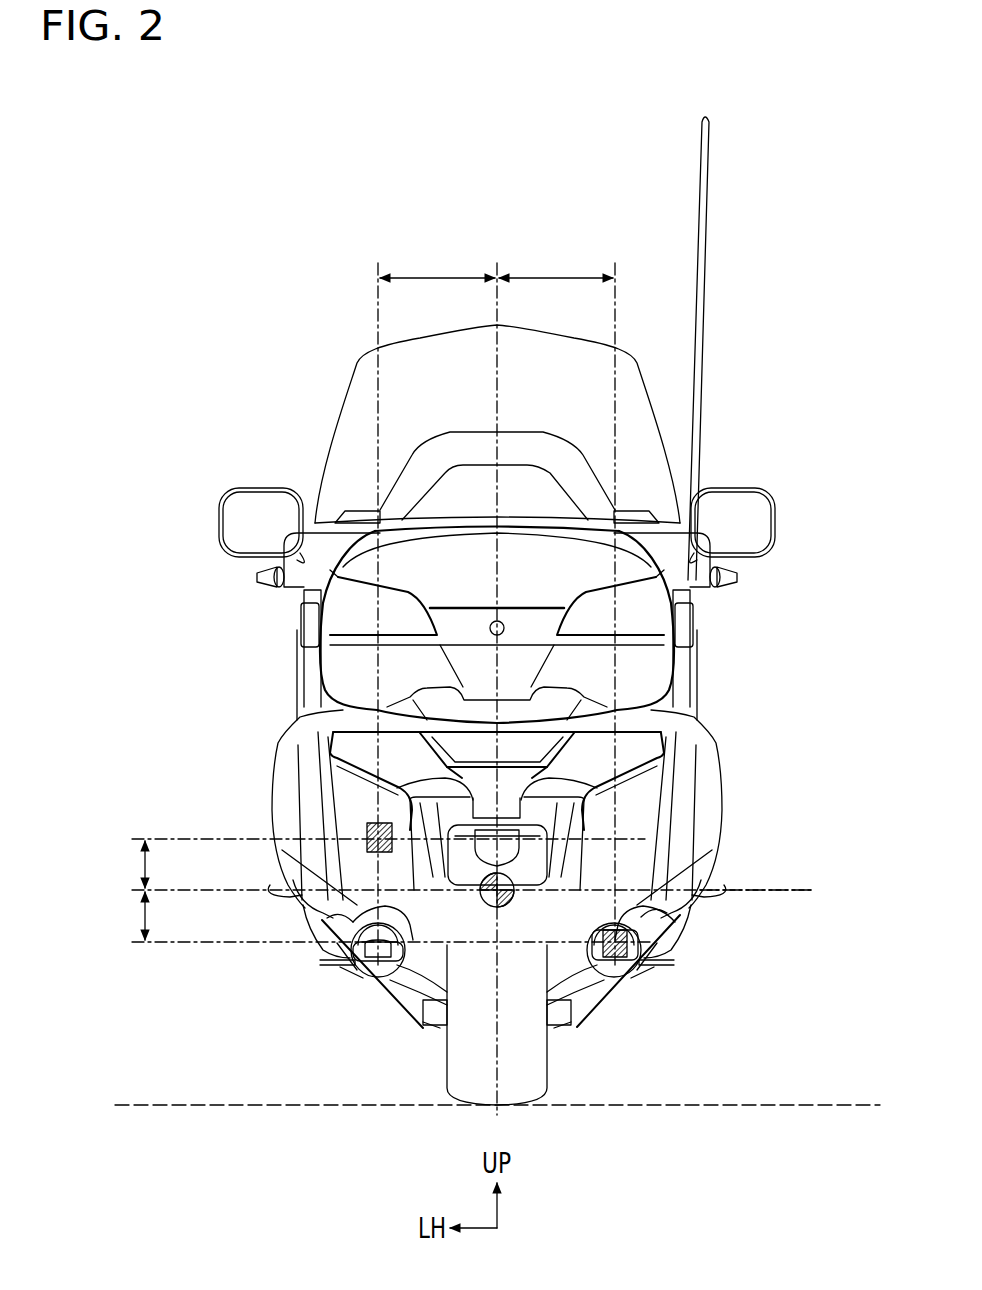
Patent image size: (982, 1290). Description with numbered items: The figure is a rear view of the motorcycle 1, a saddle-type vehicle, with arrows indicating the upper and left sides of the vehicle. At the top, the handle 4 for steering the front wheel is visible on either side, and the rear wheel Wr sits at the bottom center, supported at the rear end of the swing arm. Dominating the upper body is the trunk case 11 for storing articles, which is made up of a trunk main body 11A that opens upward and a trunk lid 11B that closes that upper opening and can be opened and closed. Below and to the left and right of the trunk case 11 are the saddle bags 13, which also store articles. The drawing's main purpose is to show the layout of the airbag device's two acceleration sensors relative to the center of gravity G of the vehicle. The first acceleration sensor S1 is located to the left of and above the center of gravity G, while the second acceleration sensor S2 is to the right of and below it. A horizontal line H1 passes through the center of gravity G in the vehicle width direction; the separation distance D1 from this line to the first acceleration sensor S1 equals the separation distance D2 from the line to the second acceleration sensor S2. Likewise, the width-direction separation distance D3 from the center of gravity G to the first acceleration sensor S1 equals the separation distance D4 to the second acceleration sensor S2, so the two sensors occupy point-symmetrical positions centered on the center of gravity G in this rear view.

The motorcycle 1 is at (310, 314).
The handle 4 is at (280, 583).
The trunk case 11 is at (842, 548).
The trunk main body 11A is at (623, 667).
The trunk lid 11B is at (580, 568).
The saddle bag 13 is at (290, 810).
The center of gravity G is at (505, 781).
The first acceleration sensor S1 is at (366, 828).
The second acceleration sensor S2 is at (640, 930).
The rear wheel Wr is at (513, 1083).
The separation distance D1 is at (124, 864).
The separation distance D2 is at (124, 916).
The separation distance D3 is at (437, 262).
The separation distance D4 is at (556, 262).
The horizontal line H1 is at (780, 890).